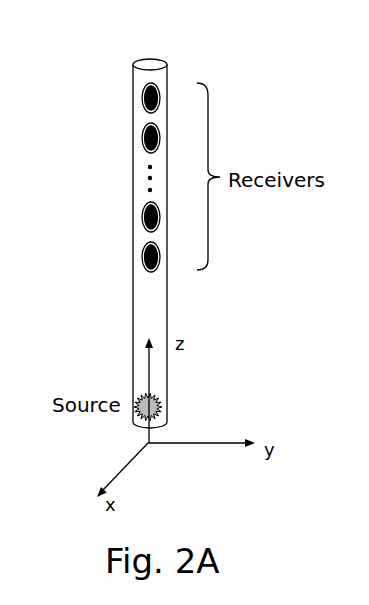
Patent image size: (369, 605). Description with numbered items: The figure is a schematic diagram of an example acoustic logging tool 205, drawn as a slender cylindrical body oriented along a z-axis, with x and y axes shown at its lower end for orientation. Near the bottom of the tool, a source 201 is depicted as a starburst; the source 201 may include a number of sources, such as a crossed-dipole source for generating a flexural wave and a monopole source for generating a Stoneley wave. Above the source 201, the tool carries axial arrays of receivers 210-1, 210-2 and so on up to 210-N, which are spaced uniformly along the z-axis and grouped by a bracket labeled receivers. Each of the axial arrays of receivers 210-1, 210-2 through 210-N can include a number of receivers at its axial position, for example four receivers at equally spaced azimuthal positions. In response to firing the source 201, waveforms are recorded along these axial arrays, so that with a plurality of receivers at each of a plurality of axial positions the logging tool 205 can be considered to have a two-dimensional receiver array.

The acoustic logging tool 205 is at (264, 82).
The source 201 is at (158, 400).
The axial array of receivers 210-N is at (143, 93).
The axial array of receivers 210-2 is at (143, 213).
The axial array of receivers 210-1 is at (143, 251).